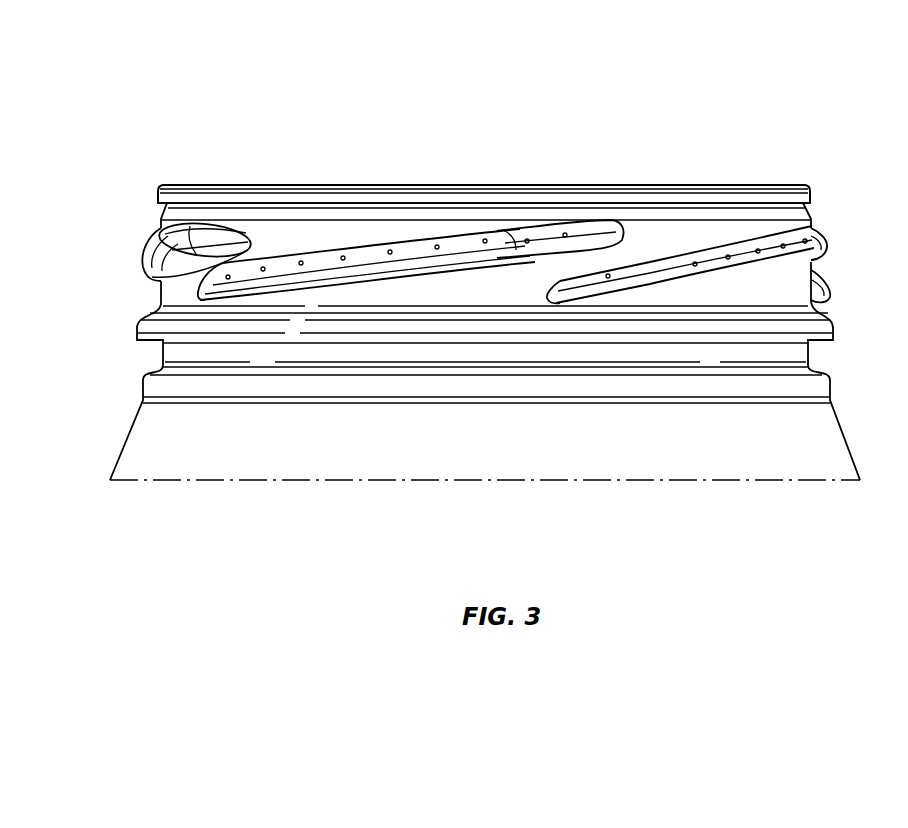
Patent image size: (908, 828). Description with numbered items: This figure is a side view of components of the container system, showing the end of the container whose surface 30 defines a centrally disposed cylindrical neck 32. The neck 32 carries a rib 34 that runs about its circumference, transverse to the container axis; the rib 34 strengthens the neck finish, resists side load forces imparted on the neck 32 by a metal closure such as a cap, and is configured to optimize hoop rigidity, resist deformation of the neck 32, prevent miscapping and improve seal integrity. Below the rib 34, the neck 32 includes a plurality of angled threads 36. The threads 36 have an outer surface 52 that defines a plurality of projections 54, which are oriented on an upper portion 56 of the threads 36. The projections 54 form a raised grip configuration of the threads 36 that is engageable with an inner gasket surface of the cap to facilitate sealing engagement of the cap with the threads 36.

The surface 30 is at (273, 233).
The neck 32 is at (84, 258).
The rib 34 is at (160, 192).
The angled threads 36 is at (205, 285).
The outer surface 52 is at (408, 247).
The projections 54 is at (487, 240).
The upper portion 56 is at (712, 262).